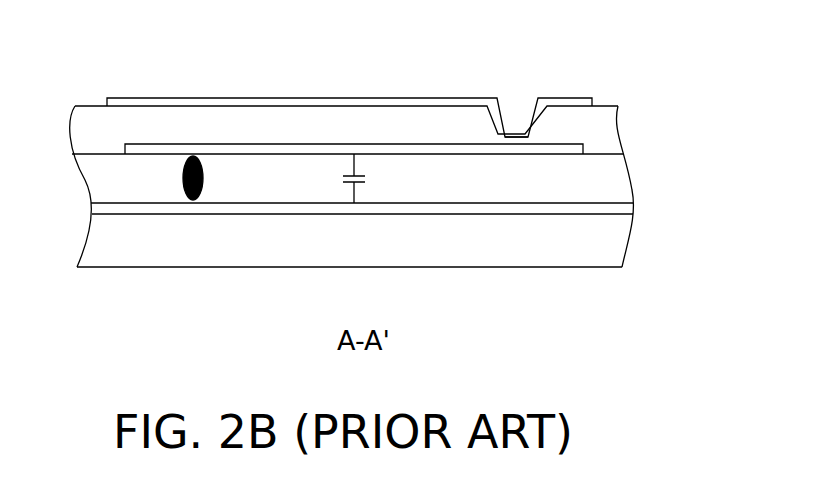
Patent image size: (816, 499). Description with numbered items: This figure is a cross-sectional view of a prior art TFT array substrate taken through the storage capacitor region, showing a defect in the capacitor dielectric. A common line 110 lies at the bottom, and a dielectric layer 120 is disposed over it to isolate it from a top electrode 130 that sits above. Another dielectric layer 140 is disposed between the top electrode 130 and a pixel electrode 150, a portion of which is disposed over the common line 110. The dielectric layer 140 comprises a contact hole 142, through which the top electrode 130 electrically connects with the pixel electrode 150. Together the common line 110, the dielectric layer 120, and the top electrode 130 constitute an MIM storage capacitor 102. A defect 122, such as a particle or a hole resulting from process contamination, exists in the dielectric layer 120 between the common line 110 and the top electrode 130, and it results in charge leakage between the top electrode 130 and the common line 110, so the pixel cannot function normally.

The MIM storage capacitor 102 is at (360, 183).
The common line 110 is at (625, 209).
The dielectric layer 120 is at (613, 191).
The defect 122 is at (182, 178).
The top electrode 130 is at (583, 148).
The dielectric layer 140 is at (607, 129).
The contact hole 142 is at (540, 121).
The pixel electrode 150 is at (597, 101).